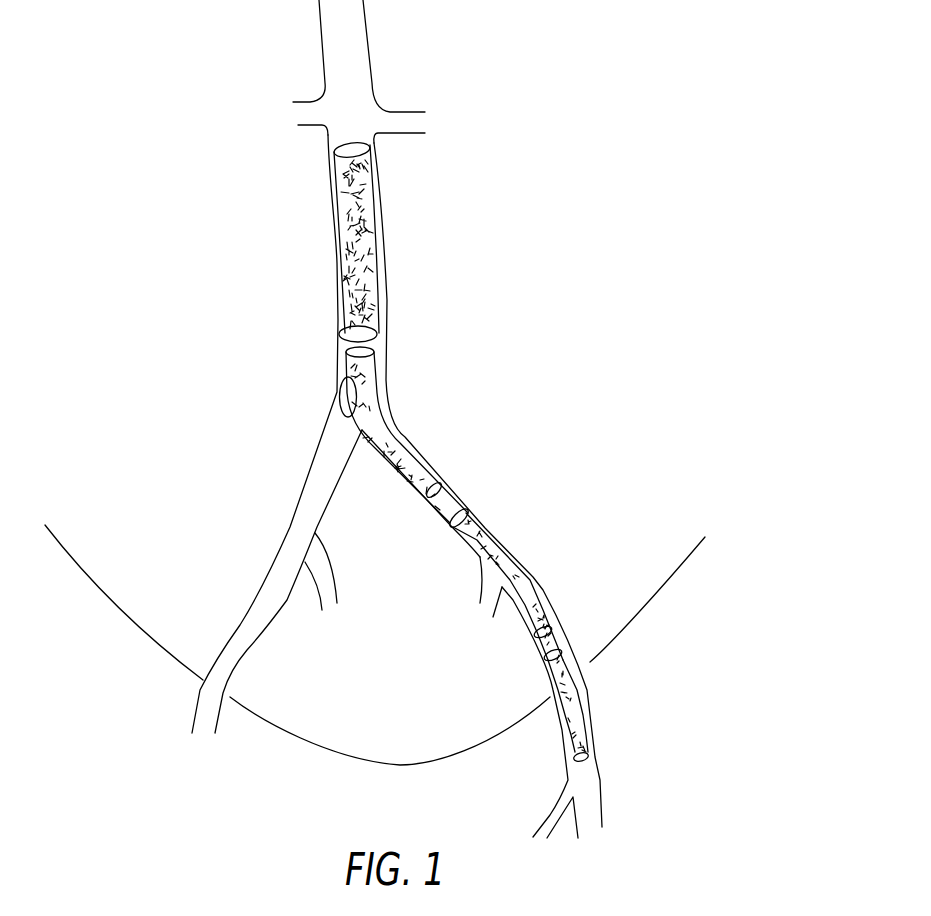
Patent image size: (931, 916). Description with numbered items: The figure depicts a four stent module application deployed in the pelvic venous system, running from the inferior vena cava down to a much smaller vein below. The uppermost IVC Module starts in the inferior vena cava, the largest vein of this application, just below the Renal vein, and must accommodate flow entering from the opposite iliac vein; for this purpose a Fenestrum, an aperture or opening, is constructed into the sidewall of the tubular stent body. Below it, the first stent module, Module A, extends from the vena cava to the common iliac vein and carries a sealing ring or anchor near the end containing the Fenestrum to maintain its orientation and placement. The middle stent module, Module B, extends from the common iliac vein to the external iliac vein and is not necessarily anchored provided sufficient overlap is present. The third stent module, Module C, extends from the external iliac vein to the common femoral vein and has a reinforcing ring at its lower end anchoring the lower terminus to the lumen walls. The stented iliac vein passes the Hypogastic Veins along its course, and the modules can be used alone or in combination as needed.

The renal vein Renal vein is at (412, 123).
The IVC module IVC Module is at (390, 145).
The fenestrum Fenestrum is at (334, 388).
The module A Module A is at (417, 317).
The module B Module B is at (455, 470).
The module C Module C is at (560, 620).
The hypogastric veins Hypogastic Veins is at (337, 583).